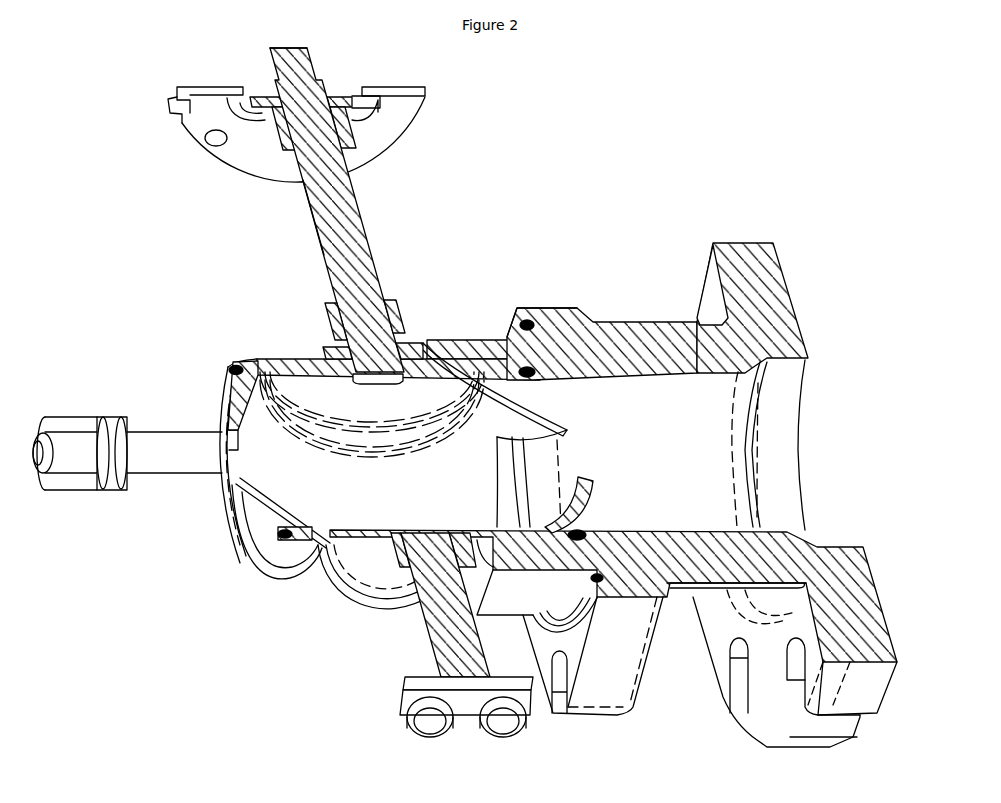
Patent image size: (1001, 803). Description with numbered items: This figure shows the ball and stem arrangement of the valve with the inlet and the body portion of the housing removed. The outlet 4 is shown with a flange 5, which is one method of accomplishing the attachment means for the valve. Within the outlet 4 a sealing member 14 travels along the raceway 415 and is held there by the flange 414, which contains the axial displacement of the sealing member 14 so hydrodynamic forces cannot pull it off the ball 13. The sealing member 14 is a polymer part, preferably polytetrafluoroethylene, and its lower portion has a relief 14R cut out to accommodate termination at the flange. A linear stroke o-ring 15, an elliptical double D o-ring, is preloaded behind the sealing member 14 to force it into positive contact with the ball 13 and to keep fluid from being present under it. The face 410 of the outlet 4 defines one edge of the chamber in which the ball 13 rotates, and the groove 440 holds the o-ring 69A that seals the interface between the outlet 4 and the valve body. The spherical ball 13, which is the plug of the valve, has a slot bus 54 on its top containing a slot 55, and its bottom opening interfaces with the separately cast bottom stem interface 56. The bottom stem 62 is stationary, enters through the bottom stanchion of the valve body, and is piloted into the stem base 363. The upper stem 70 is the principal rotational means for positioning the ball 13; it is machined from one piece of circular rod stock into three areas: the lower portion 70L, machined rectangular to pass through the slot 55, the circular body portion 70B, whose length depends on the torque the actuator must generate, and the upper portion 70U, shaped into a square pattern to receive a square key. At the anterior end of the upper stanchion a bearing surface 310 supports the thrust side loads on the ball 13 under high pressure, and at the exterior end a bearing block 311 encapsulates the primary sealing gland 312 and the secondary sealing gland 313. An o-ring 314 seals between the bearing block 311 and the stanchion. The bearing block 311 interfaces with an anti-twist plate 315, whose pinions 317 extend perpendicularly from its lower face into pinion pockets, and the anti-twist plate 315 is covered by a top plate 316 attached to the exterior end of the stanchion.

The outlet 4 is at (642, 228).
The flange 5 is at (756, 228).
The ball 13 is at (312, 580).
The sealing member 14 is at (287, 570).
The relief 14R is at (255, 363).
The linear stroke o-ring 15 is at (240, 563).
The slot bus 54 is at (402, 350).
The slot 55 is at (355, 379).
The bottom stem interface 56 is at (365, 567).
The bottom stem 62 is at (423, 615).
The o-ring 69A is at (512, 337).
The upper stem 70 is at (397, 222).
The upper portion of stem 70U is at (283, 48).
The body portion of stem 70B is at (327, 220).
The lower portion of stem 70L is at (333, 342).
The bearing surface 310 is at (397, 307).
The bearing block 311 is at (337, 97).
The primary sealing gland 312 is at (280, 137).
The secondary sealing gland 313 is at (272, 132).
The o-ring 314 is at (350, 115).
The anti-twist plate 315 is at (376, 103).
The top plate 316 is at (403, 90).
The pinions 317 is at (243, 110).
The stem base 363 is at (413, 697).
The face 410 is at (490, 580).
The flange 414 is at (483, 362).
The raceway 415 is at (572, 535).
The groove 440 is at (531, 321).